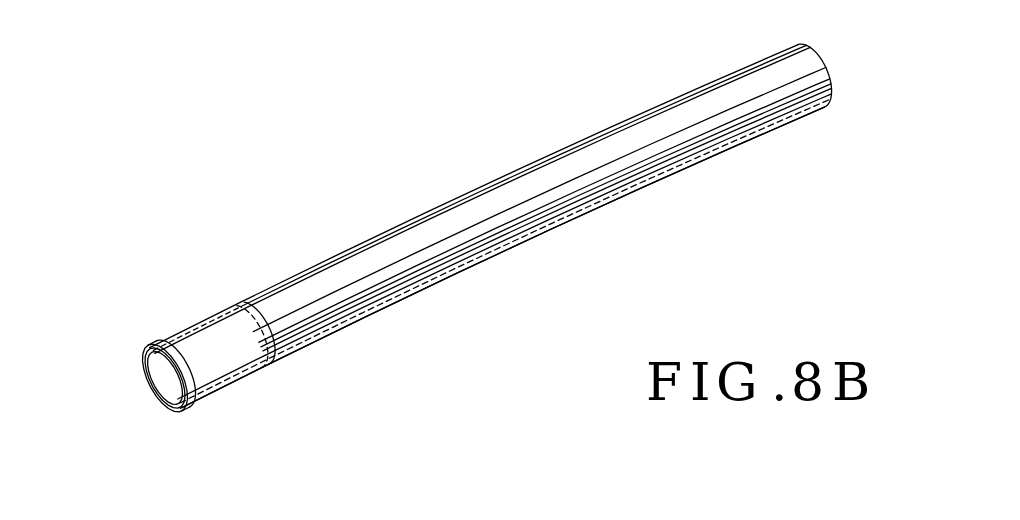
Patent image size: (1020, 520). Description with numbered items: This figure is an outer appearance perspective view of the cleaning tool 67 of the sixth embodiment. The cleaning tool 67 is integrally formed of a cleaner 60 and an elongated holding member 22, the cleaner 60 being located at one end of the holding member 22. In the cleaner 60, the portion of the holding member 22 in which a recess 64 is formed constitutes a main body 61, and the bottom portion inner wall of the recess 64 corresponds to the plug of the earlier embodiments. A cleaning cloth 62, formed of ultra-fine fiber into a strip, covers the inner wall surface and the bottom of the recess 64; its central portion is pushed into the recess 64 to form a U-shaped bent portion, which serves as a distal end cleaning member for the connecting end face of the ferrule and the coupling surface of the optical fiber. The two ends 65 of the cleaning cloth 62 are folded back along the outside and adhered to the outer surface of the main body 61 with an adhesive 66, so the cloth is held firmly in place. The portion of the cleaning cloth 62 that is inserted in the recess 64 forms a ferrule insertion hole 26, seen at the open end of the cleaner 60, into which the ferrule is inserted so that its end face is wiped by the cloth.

The holding member 22 is at (581, 277).
The cleaning tool 67 is at (409, 97).
The cleaner 60 is at (211, 246).
The cleaning cloth 62 is at (141, 380).
The ferrule insertion hole 26 is at (127, 437).
The two ends of the cleaning cloth 65 is at (208, 333).
The adhesive 66 is at (197, 326).
The recess 64 is at (262, 422).
The main body 61 is at (222, 437).